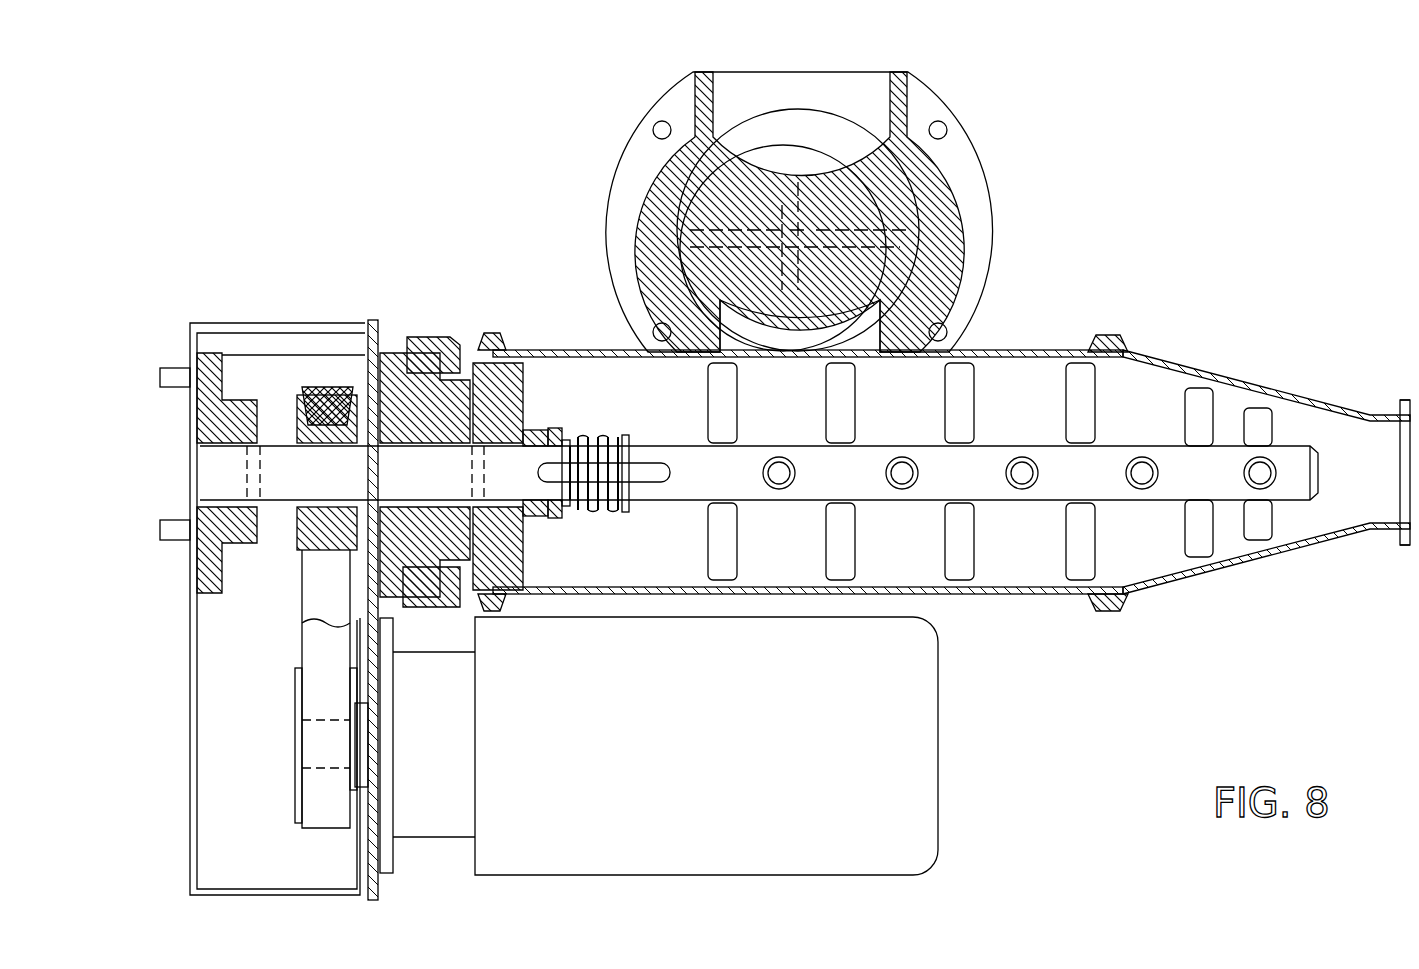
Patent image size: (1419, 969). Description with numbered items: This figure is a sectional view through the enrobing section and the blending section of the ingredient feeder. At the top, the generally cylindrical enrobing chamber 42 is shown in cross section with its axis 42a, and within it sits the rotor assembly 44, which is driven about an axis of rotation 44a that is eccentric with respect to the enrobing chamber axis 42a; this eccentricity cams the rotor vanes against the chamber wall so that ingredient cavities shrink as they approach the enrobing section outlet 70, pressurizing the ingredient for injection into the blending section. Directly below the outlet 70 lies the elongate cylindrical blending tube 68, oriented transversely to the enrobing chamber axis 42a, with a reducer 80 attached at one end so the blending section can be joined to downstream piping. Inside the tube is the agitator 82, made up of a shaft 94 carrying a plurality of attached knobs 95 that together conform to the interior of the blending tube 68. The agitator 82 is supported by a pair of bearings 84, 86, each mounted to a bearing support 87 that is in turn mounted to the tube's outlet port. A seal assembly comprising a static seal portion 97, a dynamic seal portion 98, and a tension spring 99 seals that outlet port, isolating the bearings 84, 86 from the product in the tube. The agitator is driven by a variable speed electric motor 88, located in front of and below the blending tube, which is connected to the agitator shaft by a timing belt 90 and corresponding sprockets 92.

The enrobing chamber 42 is at (935, 105).
The enrobing chamber axis 42a is at (798, 230).
The rotor assembly 44 is at (718, 190).
The axis of rotation 44a is at (782, 247).
The blending tube 68 is at (560, 350).
The enrobing section outlet 70 is at (865, 345).
The reducer 80 is at (1257, 385).
The agitator 82 is at (930, 490).
The bearing 84 is at (392, 352).
The bearing 86 is at (205, 360).
The bearing support 87 is at (430, 340).
The electric motor 88 is at (897, 838).
The timing belt 90 is at (318, 677).
The sprocket 92 is at (300, 405).
The shaft 94 is at (1175, 490).
The knob 95 is at (1075, 380).
The static seal portion 97 is at (520, 520).
The dynamic seal portion 98 is at (560, 515).
The tension spring 99 is at (590, 485).